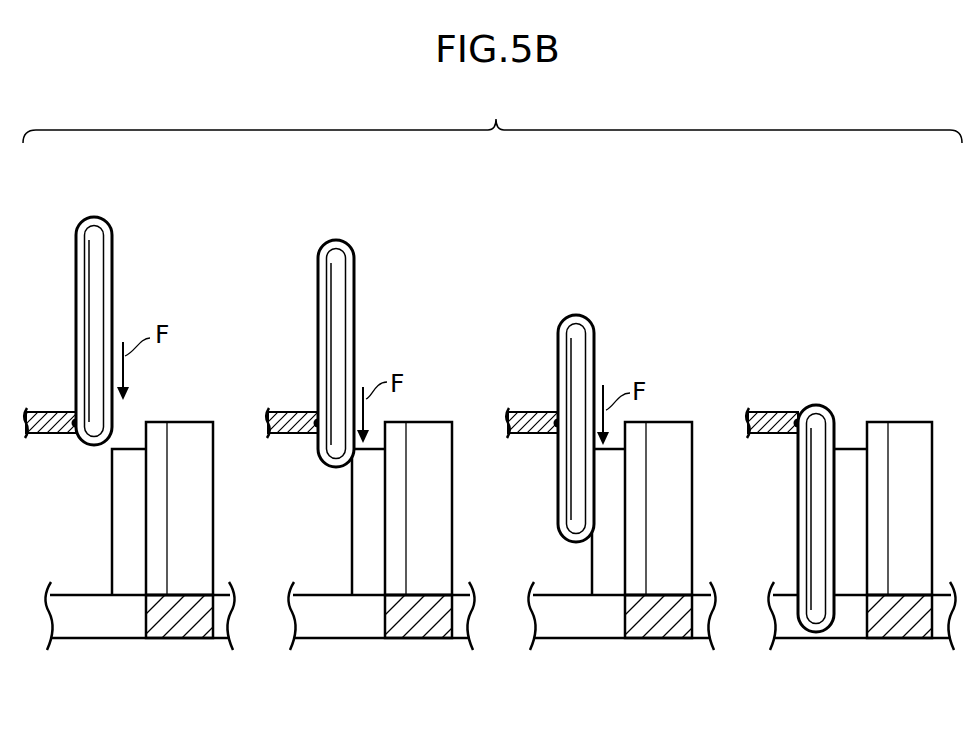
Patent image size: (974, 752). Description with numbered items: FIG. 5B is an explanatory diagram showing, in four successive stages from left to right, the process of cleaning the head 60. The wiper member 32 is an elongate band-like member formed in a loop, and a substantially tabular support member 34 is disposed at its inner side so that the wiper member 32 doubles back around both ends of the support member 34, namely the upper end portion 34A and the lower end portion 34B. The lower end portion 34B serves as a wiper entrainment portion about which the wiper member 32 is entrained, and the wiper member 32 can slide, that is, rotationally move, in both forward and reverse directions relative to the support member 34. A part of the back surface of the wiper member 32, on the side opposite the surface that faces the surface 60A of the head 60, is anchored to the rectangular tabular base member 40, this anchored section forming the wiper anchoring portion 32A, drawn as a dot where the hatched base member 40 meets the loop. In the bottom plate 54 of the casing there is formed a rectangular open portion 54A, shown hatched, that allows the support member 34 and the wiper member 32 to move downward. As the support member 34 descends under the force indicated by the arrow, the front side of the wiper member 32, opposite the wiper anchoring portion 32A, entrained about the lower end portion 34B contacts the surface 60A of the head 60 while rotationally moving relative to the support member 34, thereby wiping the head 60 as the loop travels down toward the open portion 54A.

The wiper member 32 is at (113, 255).
The wiper anchoring portion 32A is at (66, 412).
The support member 34 is at (95, 298).
The upper end portion 34A is at (94, 233).
The lower end portion 34B is at (93, 431).
The base member 40 is at (46, 434).
The bottom plate 54 is at (183, 639).
The open portion 54A is at (146, 625).
The head 60 is at (188, 422).
The surface 60A is at (112, 527).